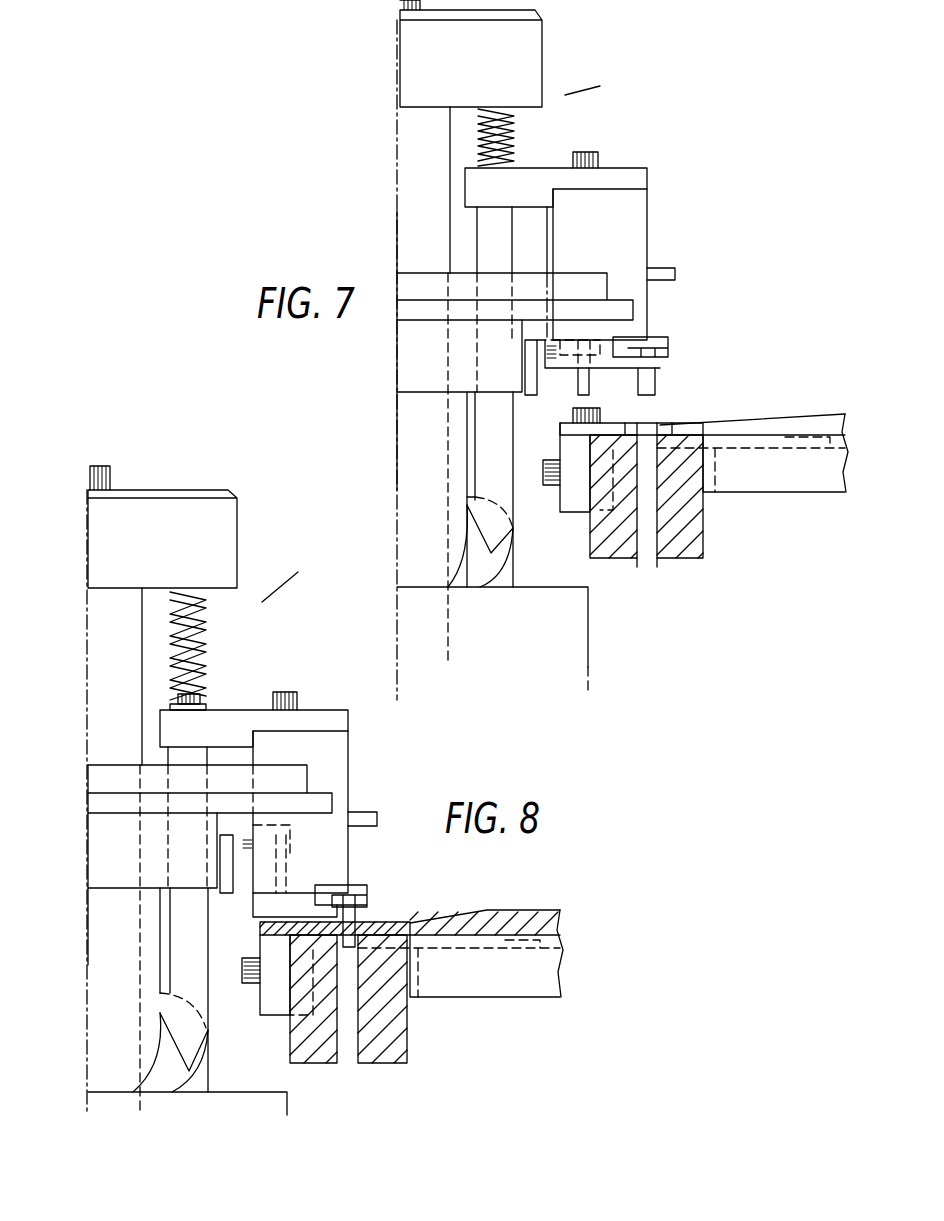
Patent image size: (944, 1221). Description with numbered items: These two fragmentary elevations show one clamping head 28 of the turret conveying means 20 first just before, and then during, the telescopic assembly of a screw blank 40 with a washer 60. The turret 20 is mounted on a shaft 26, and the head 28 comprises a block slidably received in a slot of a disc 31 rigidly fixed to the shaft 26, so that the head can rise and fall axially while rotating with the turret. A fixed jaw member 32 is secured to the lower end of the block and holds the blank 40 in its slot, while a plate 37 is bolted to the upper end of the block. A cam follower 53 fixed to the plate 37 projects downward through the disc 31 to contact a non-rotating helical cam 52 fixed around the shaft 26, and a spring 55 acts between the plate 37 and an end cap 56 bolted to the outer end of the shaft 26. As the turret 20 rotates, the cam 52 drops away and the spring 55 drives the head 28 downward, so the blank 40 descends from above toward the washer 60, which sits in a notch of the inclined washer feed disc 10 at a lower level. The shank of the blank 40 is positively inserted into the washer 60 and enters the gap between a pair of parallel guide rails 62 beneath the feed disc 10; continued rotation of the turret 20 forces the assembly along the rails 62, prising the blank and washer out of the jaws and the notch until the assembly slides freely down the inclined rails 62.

In FIG. 7, the washer feed disc 10 is at (767, 422).
In FIG. 8, the washer feed disc 10 is at (522, 910).
In FIG. 7, the conveying means 20 is at (577, 97).
In FIG. 8, the conveying means 20 is at (268, 591).
In FIG. 7, the shaft 26 is at (407, 185).
In FIG. 8, the shaft 26 is at (128, 683).
In FIG. 7, the clamping head 28 is at (637, 229).
In FIG. 8, the clamping head 28 is at (318, 768).
In FIG. 7, the disc 31 is at (416, 283).
In FIG. 8, the disc 31 is at (210, 937).
In FIG. 8, the fixed jaw member 32 is at (278, 902).
In FIG. 7, the plate 37 is at (527, 174).
In FIG. 8, the plate 37 is at (254, 737).
In FIG. 7, the screw blank 40 is at (650, 378).
In FIG. 8, the screw blank 40 is at (368, 902).
In FIG. 7, the helical cam 52 is at (497, 561).
In FIG. 8, the helical cam 52 is at (198, 1087).
In FIG. 7, the cam follower 53 is at (502, 443).
In FIG. 8, the cam follower 53 is at (200, 980).
In FIG. 7, the spring 55 is at (515, 128).
In FIG. 8, the spring 55 is at (208, 672).
In FIG. 7, the end cap 56 is at (542, 45).
In FIG. 8, the end cap 56 is at (237, 532).
In FIG. 7, the washer 60 is at (630, 425).
In FIG. 8, the washer 60 is at (367, 922).
In FIG. 7, the guide rails 62 is at (632, 560).
In FIG. 8, the guide rails 62 is at (298, 1037).